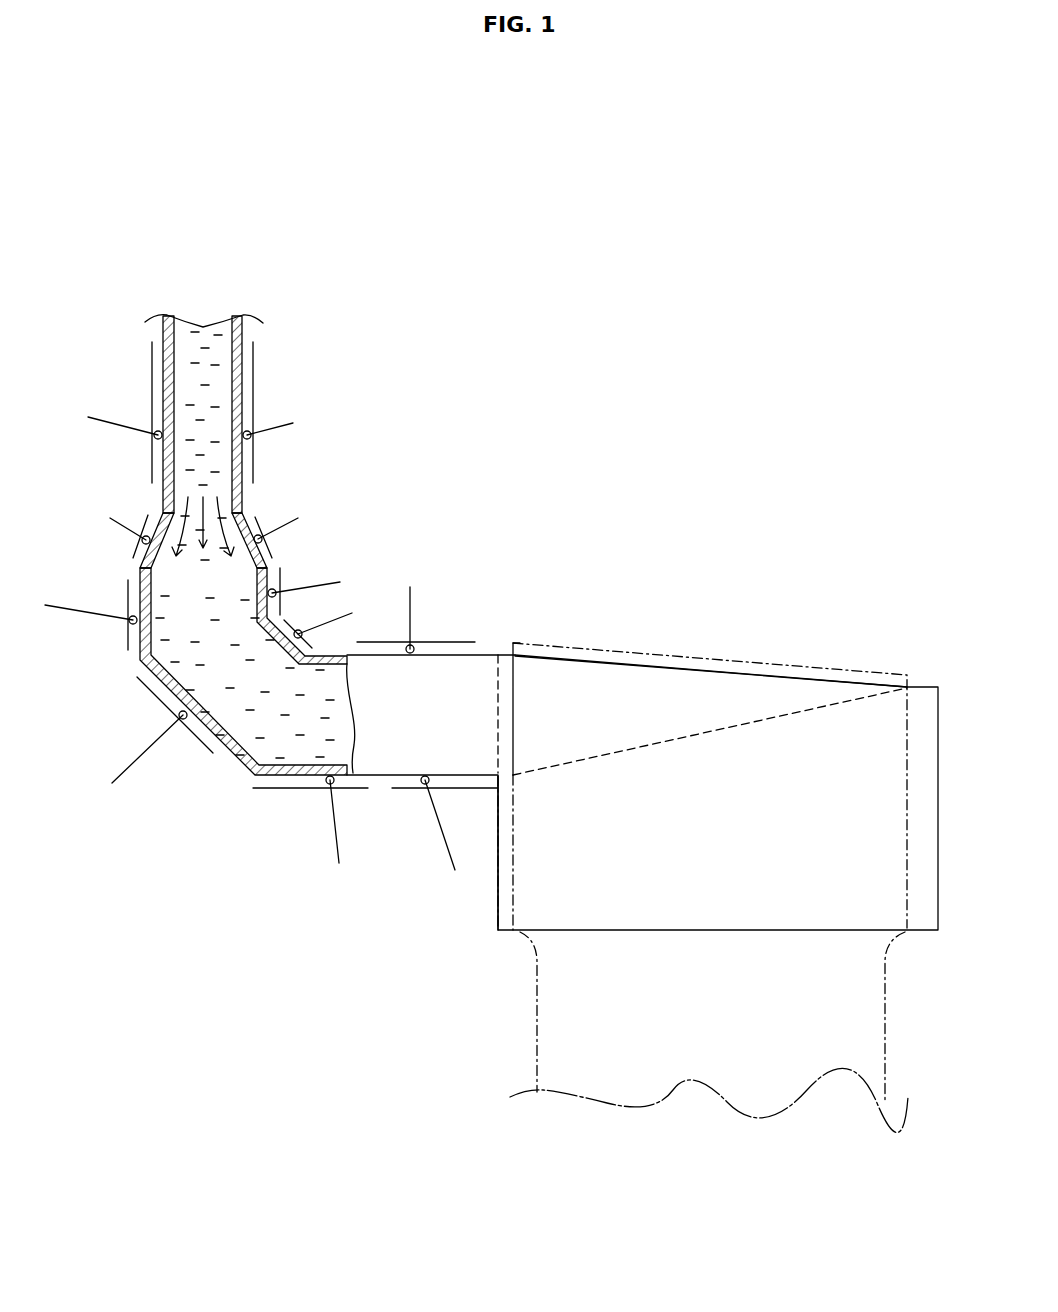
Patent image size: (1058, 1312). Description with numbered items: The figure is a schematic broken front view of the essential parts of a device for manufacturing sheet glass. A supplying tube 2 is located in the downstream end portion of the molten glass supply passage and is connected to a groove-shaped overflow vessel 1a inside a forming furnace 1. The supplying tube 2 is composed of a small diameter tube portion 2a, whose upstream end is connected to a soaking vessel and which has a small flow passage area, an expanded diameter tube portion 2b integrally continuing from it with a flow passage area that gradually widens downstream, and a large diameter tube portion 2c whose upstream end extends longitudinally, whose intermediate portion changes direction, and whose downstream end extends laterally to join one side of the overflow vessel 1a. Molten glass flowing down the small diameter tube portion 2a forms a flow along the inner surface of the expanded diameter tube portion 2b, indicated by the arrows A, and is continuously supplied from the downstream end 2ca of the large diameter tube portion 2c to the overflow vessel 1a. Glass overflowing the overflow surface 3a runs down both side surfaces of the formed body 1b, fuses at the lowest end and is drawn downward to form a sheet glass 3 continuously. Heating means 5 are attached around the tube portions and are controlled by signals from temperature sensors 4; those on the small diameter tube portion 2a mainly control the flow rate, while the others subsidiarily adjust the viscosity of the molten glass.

The forming furnace 1 is at (685, 757).
The overflow vessel 1a is at (633, 690).
The formed body 1b is at (503, 898).
The supplying tube 2 is at (299, 545).
The small diameter tube portion 2a is at (170, 370).
The expanded diameter tube portion 2b is at (143, 565).
The large diameter tube portion 2c is at (147, 682).
The downstream end 2ca is at (498, 674).
The sheet glass 3 is at (537, 1015).
The overflow surface 3a is at (561, 648).
The temperature sensor 4 is at (280, 425).
The heating means 5 is at (255, 370).